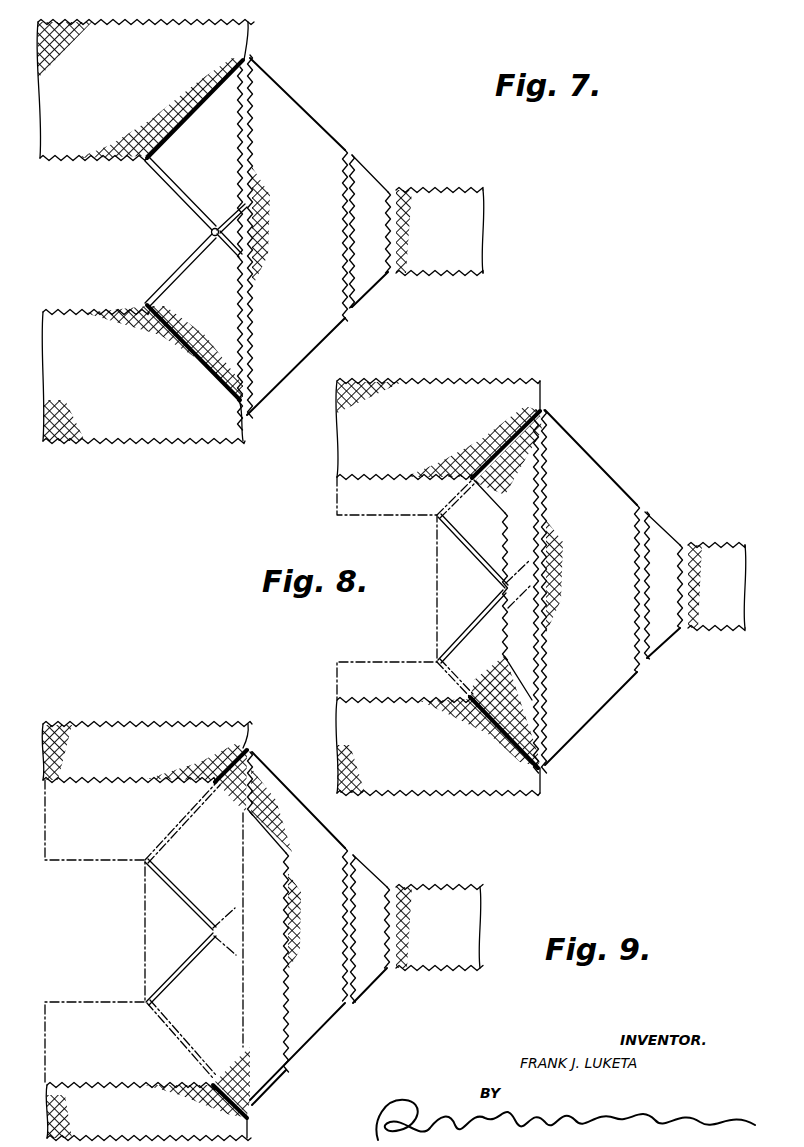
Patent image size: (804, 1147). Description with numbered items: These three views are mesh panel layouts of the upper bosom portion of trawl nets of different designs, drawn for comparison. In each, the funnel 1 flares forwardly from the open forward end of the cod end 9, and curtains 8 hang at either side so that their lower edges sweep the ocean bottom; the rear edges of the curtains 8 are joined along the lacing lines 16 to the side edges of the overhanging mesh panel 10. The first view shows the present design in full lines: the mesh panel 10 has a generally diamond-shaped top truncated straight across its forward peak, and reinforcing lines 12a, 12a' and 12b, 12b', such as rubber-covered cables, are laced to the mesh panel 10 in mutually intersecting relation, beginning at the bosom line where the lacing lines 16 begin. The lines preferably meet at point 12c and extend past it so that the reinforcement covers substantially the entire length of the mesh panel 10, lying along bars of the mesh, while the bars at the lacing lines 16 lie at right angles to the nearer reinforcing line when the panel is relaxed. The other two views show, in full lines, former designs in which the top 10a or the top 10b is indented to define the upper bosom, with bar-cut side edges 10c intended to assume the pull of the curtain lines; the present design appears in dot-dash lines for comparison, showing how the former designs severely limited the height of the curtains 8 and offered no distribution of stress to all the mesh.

In FIG. 7, the funnel 1 is at (326, 116).
In FIG. 7, the curtains 8 is at (90, 98).
In FIG. 8, the curtains 8 is at (405, 433).
In FIG. 9, the curtains 8 is at (114, 758).
In FIG. 7, the cod end 9 is at (442, 186).
In FIG. 8, the cod end 9 is at (722, 631).
In FIG. 9, the cod end 9 is at (452, 971).
In FIG. 7, the mesh panel 10 is at (218, 305).
In FIG. 8, the indented net top 10a is at (518, 491).
In FIG. 9, the indented net top 10b is at (320, 1022).
In FIG. 8, the bar-cut side edges 10c is at (486, 680).
In FIG. 9, the bar-cut side edges 10c is at (245, 1052).
In FIG. 7, the reinforcing line 12a is at (180, 270).
In FIG. 7, the reinforcing line extension 12a' is at (263, 216).
In FIG. 7, the reinforcing line 12b is at (180, 193).
In FIG. 7, the reinforcing line extension 12b' is at (223, 252).
In FIG. 7, the meeting point 12c is at (214, 229).
In FIG. 7, the lacing lines 16 is at (233, 65).
In FIG. 8, the lacing lines 16 is at (515, 427).
In FIG. 9, the lacing lines 16 is at (240, 748).